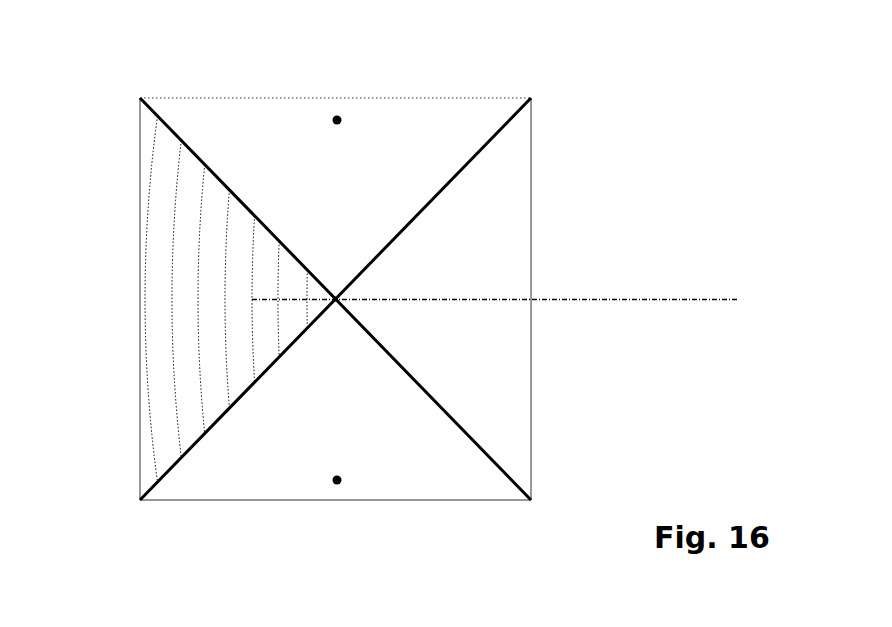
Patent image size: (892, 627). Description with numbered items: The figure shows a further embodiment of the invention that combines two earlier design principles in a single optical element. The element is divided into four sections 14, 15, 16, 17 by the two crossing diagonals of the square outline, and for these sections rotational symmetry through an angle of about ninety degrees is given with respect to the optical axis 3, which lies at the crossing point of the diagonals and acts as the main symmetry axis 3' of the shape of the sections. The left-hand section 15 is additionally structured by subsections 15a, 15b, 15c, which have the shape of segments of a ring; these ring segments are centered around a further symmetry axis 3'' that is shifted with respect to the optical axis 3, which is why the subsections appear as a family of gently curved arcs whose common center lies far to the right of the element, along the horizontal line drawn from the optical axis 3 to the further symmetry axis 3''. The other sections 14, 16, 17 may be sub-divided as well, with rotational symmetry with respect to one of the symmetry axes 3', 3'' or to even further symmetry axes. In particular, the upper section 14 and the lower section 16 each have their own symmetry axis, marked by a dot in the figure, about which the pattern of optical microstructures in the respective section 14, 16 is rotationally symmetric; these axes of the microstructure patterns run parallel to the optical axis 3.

The optical axis 3 is at (335, 299).
The main symmetry axis 3' is at (335, 299).
The further symmetry axis 3'' is at (508, 205).
The section 14 is at (430, 145).
The section 15 is at (138, 126).
The subsection 15a is at (158, 430).
The subsection 15b is at (190, 430).
The subsection 15c is at (225, 398).
The section 16 is at (440, 472).
The section 17 is at (517, 430).